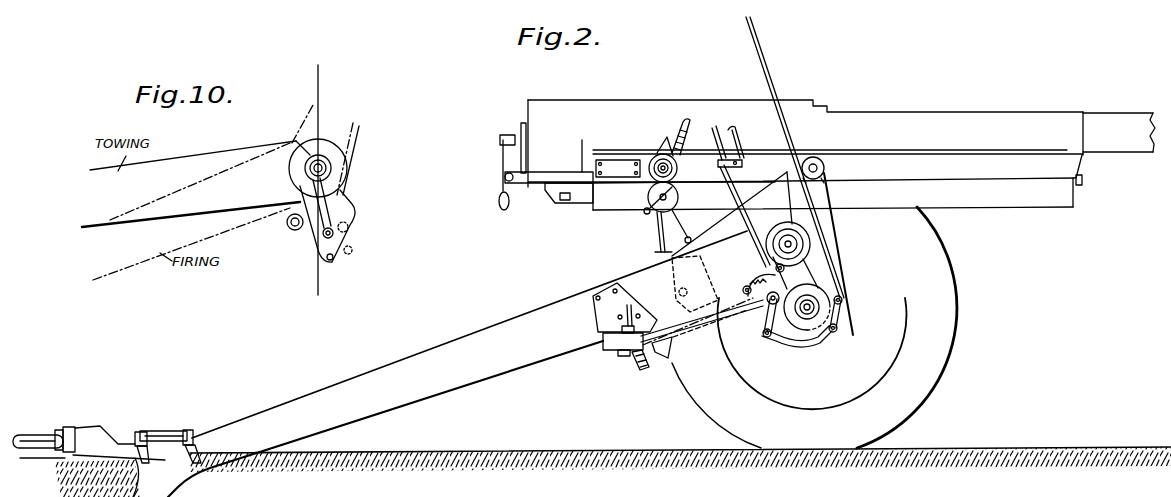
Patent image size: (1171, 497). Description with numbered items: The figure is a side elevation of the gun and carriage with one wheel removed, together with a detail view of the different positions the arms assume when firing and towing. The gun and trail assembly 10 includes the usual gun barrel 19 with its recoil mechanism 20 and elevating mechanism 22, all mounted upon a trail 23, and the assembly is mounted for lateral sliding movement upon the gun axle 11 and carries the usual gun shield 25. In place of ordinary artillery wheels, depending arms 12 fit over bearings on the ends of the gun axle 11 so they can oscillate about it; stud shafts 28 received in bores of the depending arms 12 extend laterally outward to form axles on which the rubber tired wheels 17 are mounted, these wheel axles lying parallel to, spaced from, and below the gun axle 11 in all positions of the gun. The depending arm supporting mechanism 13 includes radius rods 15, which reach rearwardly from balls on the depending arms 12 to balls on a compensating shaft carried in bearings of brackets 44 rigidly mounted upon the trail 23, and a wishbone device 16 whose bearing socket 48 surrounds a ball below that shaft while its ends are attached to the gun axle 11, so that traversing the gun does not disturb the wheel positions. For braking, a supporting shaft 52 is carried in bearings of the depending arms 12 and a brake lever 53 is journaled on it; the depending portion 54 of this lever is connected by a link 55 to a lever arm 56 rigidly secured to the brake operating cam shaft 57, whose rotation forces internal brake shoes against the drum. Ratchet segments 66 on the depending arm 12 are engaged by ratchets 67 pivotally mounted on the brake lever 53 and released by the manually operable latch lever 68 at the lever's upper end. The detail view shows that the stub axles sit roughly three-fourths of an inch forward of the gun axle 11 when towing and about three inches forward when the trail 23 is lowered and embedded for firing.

In FIG. 2, the gun and trail assembly 10 is at (791, 146).
In FIG. 2, the gun barrel 19 is at (967, 118).
In FIG. 2, the recoil mechanism 20 is at (612, 203).
In FIG. 2, the elevating mechanism 22 is at (678, 178).
In FIG. 2, the latch lever 68 is at (716, 136).
In FIG. 2, the brake lever 53 is at (743, 177).
In FIG. 2, the gun shield 25 is at (765, 72).
In FIG. 2, the rubber tired wheels 17 is at (948, 342).
In FIG. 10, the gun axle 11 is at (325, 167).
In FIG. 2, the gun axle 11 is at (791, 244).
In FIG. 10, the depending arms 12 is at (340, 207).
In FIG. 2, the depending arms 12 is at (815, 279).
In FIG. 2, the stud shafts 28 is at (805, 312).
In FIG. 2, the supporting shaft 52 is at (769, 304).
In FIG. 2, the depending portion 54 is at (766, 337).
In FIG. 2, the link 55 is at (820, 341).
In FIG. 2, the lever arm 56 is at (838, 328).
In FIG. 2, the brake operating cam shaft 57 is at (843, 300).
In FIG. 2, the ratchet segments 66 is at (747, 286).
In FIG. 2, the ratchets 67 is at (775, 266).
In FIG. 2, the brackets 44 is at (597, 292).
In FIG. 2, the depending arm supporting mechanism 13 is at (623, 356).
In FIG. 2, the bearing socket 48 is at (636, 364).
In FIG. 2, the radius rods 15 is at (706, 343).
In FIG. 2, the wishbone device 16 is at (667, 362).
In FIG. 10, the trail 23 is at (222, 160).
In FIG. 2, the trail 23 is at (405, 360).